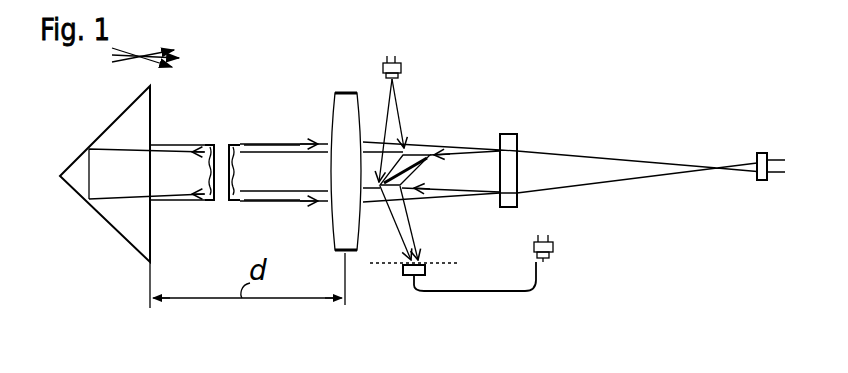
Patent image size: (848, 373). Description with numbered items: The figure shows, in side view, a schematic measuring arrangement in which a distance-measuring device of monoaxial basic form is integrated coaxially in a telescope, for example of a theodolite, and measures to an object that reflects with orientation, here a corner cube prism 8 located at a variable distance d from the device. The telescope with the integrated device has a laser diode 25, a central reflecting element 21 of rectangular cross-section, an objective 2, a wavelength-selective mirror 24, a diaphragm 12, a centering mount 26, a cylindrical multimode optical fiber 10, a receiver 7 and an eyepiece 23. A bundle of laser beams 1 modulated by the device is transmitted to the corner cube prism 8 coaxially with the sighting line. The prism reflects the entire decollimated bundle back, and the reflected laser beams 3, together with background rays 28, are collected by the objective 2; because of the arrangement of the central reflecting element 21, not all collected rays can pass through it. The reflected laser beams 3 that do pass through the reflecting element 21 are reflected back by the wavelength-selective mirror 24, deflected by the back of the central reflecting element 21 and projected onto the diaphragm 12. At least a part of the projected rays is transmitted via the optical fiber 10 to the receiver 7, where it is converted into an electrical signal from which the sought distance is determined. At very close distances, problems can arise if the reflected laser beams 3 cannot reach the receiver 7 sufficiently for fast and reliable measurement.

The bundle of laser beams 1 is at (241, 187).
The objective 2 is at (338, 107).
The reflected laser beams 3 is at (287, 148).
The receiver 7 is at (553, 246).
The corner cube prism 8 is at (120, 215).
The cylindrical multimode optical fiber 10 is at (452, 288).
The diaphragm 12 is at (421, 265).
The central reflecting element 21 is at (413, 162).
The eyepiece 23 is at (760, 157).
The wavelength-selective mirror 24 is at (508, 138).
The laser diode 25 is at (401, 64).
The centering mount 26 is at (405, 276).
The background rays 28 is at (158, 65).